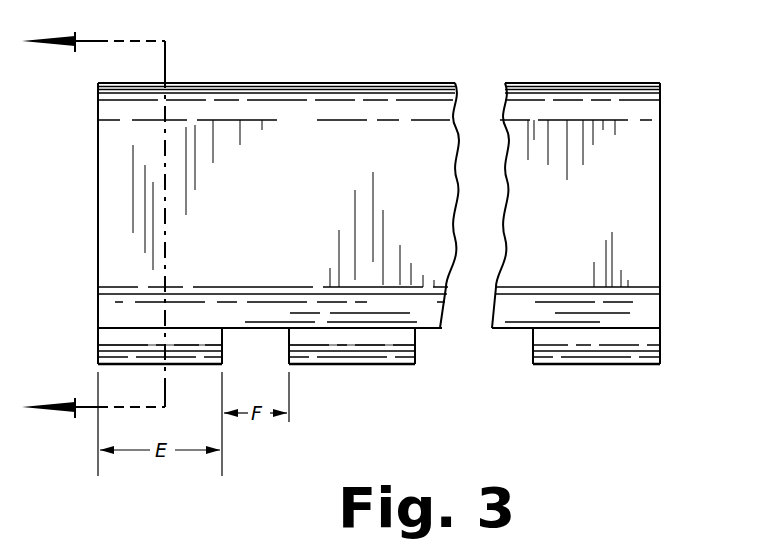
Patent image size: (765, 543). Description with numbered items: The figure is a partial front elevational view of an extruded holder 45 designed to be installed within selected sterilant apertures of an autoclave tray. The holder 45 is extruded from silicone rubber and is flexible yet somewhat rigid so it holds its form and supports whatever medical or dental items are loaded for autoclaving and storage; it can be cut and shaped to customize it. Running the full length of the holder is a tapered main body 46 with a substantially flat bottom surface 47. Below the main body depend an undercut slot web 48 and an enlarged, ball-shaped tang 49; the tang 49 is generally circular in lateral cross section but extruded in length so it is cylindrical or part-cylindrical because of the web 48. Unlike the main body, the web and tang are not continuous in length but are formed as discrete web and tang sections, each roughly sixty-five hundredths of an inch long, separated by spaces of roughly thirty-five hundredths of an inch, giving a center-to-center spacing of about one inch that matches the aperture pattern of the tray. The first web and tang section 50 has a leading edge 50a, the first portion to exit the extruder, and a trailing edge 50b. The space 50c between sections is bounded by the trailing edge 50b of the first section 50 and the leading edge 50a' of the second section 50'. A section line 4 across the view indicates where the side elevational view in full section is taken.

The section line for FIG. 4 is at (93, 227).
The holder 45 is at (408, 52).
The tapered main body 46 is at (105, 188).
The substantially flat bottom surface 47 is at (294, 337).
The undercut slot web 48 is at (105, 336).
The ball-shaped tang 49 is at (105, 370).
The web and tang section 50 is at (123, 352).
The leading edge 50a is at (117, 325).
The trailing edge 50b is at (224, 353).
The space 50c is at (258, 336).
The second web and tang section 50' is at (474, 372).
The leading edge of second section 50a' is at (350, 373).